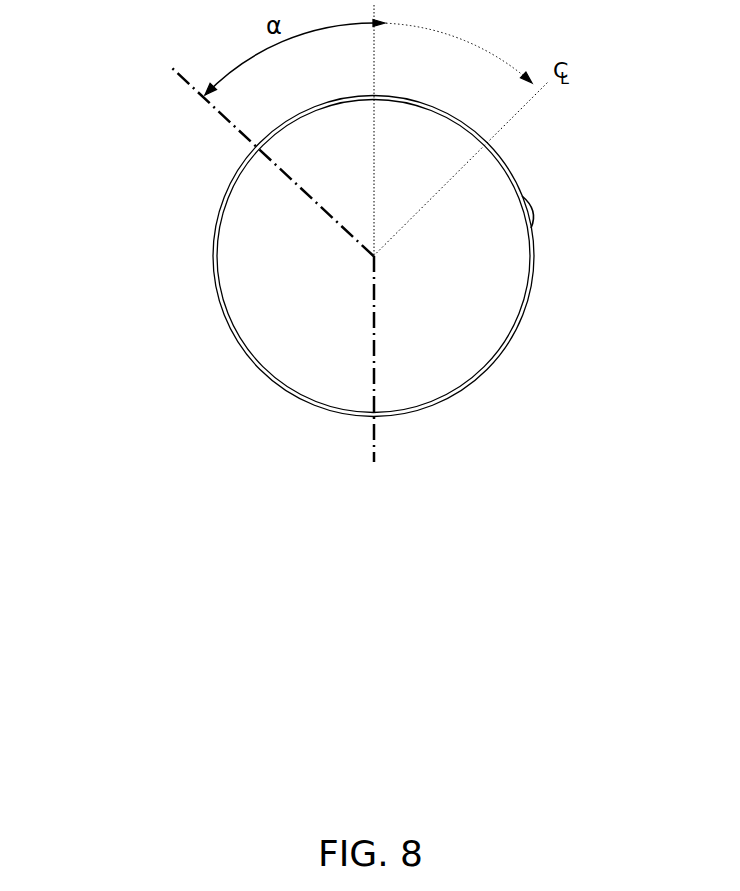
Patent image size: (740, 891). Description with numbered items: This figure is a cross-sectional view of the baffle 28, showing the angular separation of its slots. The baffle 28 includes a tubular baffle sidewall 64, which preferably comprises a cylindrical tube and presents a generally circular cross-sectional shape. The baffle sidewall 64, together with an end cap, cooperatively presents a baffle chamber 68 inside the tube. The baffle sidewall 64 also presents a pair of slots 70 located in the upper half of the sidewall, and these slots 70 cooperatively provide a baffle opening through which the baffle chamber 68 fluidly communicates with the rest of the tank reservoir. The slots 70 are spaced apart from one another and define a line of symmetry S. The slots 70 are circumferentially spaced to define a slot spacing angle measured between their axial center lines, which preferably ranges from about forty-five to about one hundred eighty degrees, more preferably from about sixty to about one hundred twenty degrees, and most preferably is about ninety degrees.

The baffle 28 is at (114, 107).
The baffle sidewall 64 is at (522, 318).
The baffle chamber 68 is at (531, 226).
The slots 70 is at (215, 221).
The line of symmetry S is at (374, 329).